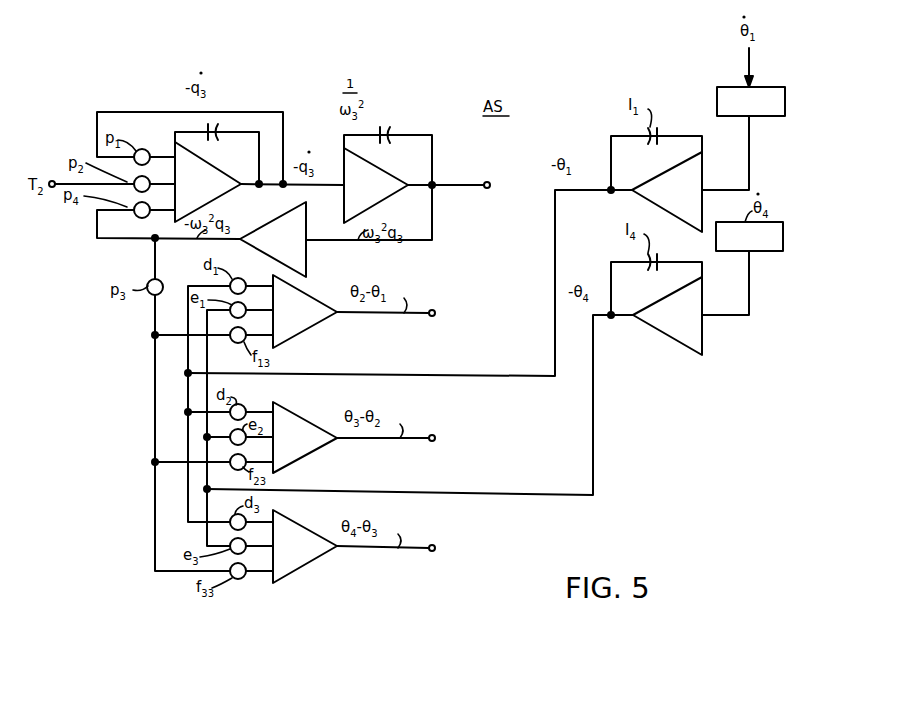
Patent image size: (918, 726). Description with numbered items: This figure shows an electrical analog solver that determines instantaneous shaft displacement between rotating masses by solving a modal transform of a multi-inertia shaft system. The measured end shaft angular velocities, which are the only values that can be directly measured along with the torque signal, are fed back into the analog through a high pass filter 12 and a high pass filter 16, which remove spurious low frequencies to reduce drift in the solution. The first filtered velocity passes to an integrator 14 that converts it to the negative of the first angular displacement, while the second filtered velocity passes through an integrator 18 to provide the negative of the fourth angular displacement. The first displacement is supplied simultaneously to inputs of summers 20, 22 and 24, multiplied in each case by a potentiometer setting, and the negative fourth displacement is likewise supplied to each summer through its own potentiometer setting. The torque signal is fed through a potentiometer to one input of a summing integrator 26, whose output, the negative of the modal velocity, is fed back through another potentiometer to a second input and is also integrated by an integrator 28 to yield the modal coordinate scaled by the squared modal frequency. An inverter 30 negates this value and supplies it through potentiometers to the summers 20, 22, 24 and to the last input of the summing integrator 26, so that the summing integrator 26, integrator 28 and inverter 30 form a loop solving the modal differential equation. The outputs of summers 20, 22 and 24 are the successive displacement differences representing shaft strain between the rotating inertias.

The high pass filter 12 is at (757, 117).
The integrator 14 is at (680, 174).
The high pass filter 16 is at (757, 252).
The integrator 18 is at (680, 303).
The summer 20 is at (332, 311).
The summer 22 is at (332, 437).
The summer 24 is at (332, 546).
The summing integrator 26 is at (196, 175).
The integrator 28 is at (417, 175).
The inverter 30 is at (336, 231).